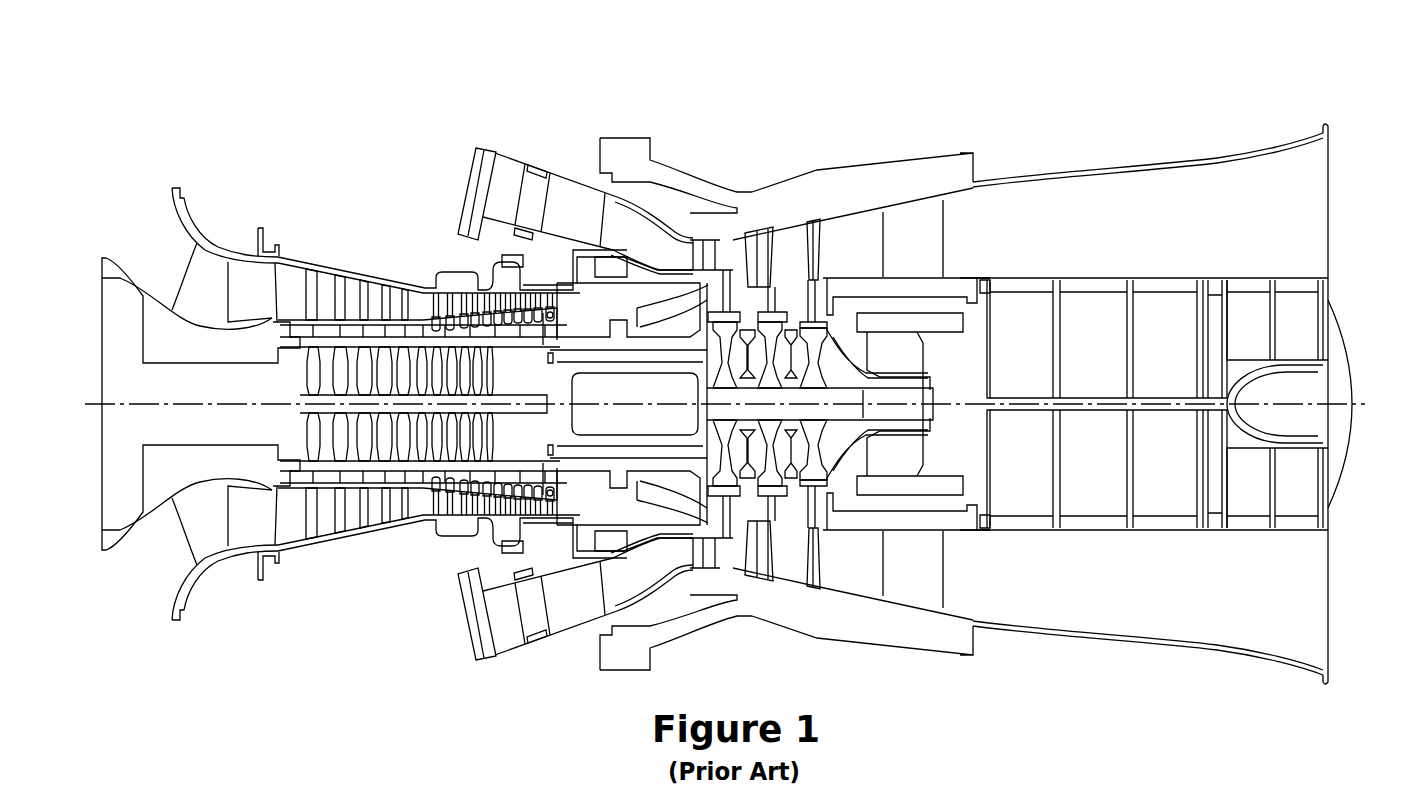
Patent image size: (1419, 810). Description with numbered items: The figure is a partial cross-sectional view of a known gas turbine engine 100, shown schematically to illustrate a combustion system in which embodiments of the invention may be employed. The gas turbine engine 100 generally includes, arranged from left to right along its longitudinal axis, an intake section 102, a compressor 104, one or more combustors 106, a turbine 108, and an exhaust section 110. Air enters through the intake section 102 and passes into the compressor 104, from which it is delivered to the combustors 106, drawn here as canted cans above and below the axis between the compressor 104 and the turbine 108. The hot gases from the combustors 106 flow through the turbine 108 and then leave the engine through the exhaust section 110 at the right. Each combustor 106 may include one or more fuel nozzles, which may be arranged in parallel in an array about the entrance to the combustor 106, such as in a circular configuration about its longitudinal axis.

The gas turbine engine 100 is at (955, 95).
The intake section 102 is at (150, 250).
The compressor 104 is at (368, 555).
The combustor 106 is at (528, 142).
The turbine 108 is at (863, 660).
The exhaust section 110 is at (1257, 220).